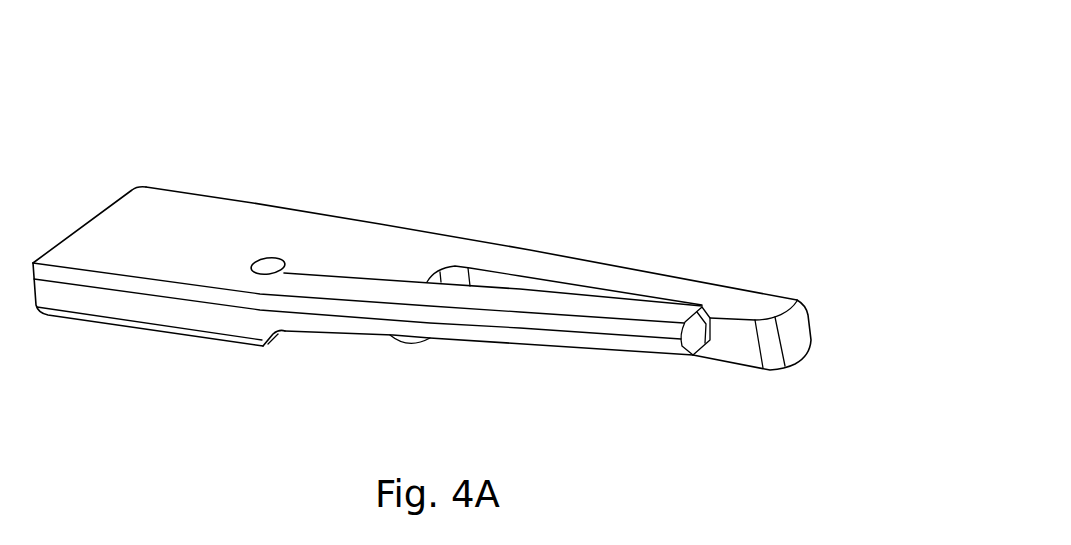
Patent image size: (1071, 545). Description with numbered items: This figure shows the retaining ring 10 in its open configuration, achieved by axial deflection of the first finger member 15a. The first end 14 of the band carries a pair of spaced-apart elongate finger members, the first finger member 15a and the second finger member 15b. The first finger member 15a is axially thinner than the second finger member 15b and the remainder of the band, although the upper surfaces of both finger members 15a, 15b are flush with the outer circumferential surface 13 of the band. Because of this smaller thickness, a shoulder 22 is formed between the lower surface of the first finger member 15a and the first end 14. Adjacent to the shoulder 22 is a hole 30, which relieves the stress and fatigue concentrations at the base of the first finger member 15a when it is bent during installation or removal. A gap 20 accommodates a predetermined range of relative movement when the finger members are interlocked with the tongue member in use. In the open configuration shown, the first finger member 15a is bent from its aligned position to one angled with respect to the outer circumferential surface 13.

The retaining ring 10 is at (489, 228).
The outer circumferential surface 13 is at (137, 198).
The first end 14 is at (363, 232).
The first finger member 15a is at (622, 342).
The second finger member 15b is at (793, 330).
The gap 20 is at (500, 282).
The shoulder 22 is at (280, 333).
The hole 30 is at (262, 270).